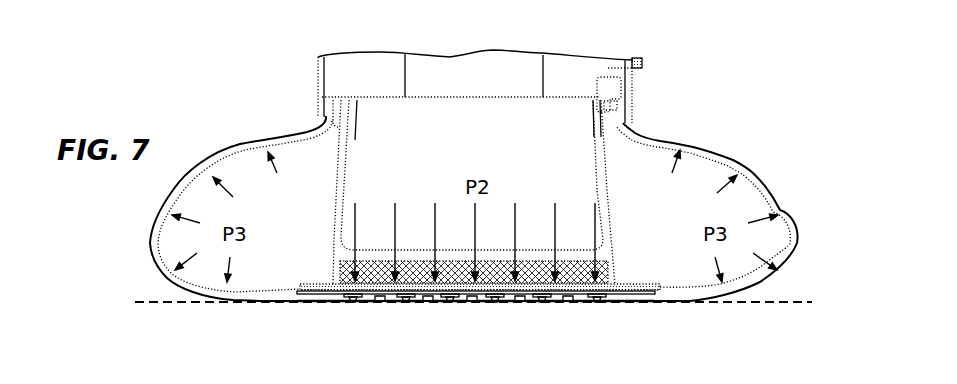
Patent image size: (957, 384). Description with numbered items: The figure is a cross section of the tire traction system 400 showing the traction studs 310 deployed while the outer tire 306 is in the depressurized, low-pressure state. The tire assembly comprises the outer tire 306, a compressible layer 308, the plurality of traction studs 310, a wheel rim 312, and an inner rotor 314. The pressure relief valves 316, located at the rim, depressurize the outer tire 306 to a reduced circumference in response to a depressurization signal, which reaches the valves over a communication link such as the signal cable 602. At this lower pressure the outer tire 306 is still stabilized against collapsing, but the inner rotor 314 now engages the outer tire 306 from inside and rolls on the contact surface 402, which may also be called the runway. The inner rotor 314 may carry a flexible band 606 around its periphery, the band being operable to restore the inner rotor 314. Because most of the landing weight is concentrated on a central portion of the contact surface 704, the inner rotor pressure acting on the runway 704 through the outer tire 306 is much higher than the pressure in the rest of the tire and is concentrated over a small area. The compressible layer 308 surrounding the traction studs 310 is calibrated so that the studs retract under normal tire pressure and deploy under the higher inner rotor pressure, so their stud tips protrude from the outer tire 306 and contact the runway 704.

The outer tire 306 is at (237, 143).
The compressible layer 308 is at (307, 297).
The traction studs 310 is at (353, 303).
The wheel rim 312 is at (380, 97).
The inner rotor 314 is at (343, 155).
The pressure relief valves 316 is at (607, 93).
The tire traction system 400 is at (787, 66).
The contact surface 402 is at (737, 172).
The signal cable 602 is at (645, 63).
The flexible band 606 is at (623, 293).
The contact surface 704 is at (810, 300).